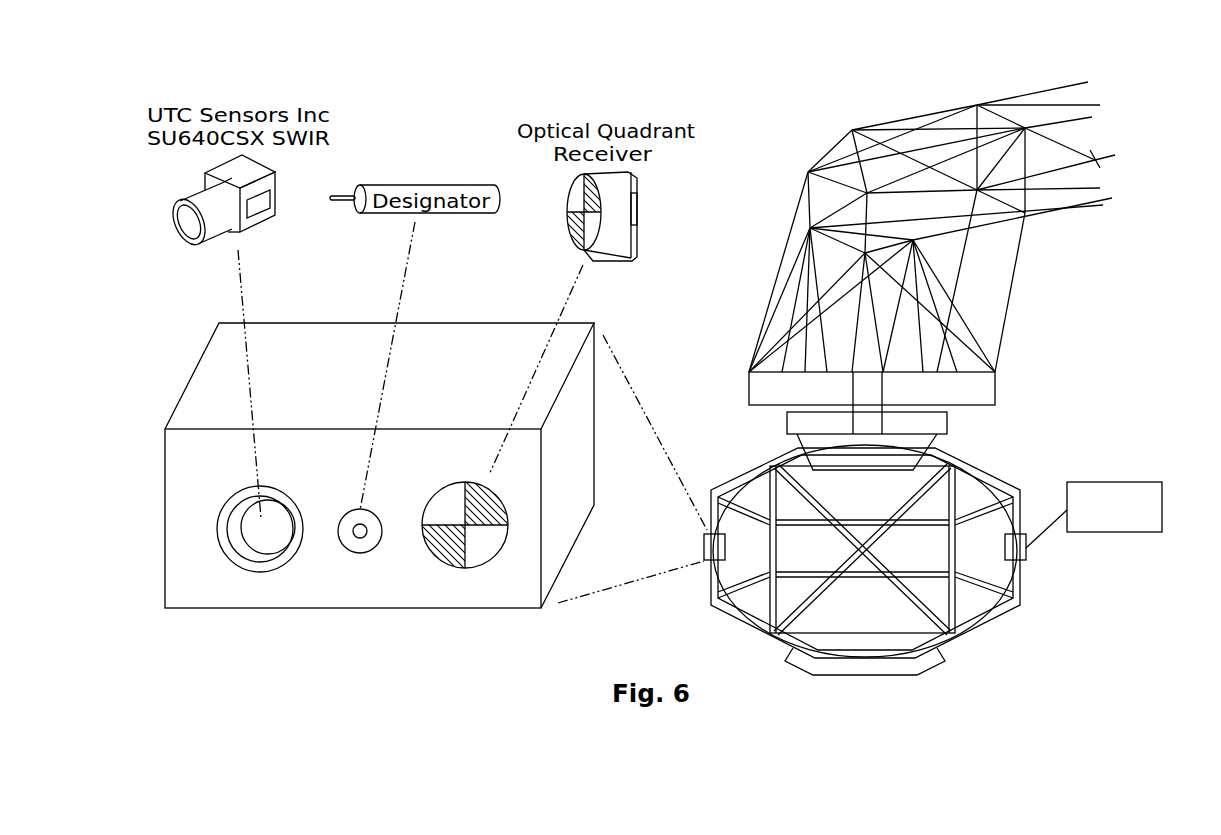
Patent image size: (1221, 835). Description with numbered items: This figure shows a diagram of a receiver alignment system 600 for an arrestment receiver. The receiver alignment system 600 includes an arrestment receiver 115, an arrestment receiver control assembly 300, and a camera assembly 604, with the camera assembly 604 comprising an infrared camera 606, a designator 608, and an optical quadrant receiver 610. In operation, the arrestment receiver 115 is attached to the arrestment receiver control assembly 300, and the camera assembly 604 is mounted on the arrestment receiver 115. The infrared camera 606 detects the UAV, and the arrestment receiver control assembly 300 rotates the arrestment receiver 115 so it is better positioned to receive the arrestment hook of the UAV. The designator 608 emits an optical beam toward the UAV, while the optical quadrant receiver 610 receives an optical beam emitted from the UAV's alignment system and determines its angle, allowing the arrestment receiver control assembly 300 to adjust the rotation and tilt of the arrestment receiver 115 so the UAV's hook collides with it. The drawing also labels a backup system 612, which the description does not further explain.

The receiver alignment system 600 is at (796, 86).
The camera assembly 604 is at (189, 378).
The infrared camera 606 is at (260, 570).
The designator 608 is at (362, 553).
The optical quadrant receiver 610 is at (467, 560).
The arrestment receiver 115 is at (732, 485).
The arrestment receiver control assembly 300 is at (940, 423).
The backup system 612 is at (1117, 532).